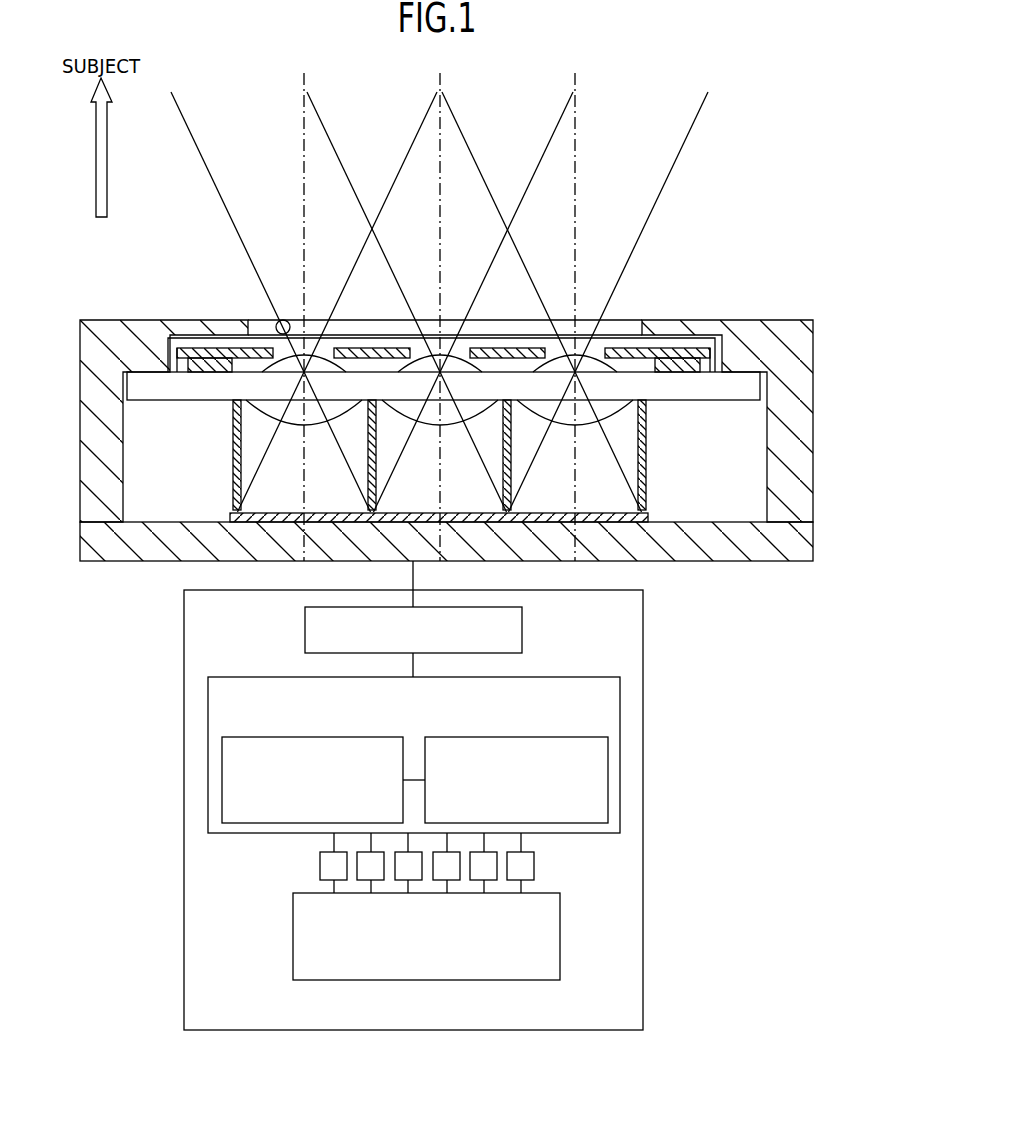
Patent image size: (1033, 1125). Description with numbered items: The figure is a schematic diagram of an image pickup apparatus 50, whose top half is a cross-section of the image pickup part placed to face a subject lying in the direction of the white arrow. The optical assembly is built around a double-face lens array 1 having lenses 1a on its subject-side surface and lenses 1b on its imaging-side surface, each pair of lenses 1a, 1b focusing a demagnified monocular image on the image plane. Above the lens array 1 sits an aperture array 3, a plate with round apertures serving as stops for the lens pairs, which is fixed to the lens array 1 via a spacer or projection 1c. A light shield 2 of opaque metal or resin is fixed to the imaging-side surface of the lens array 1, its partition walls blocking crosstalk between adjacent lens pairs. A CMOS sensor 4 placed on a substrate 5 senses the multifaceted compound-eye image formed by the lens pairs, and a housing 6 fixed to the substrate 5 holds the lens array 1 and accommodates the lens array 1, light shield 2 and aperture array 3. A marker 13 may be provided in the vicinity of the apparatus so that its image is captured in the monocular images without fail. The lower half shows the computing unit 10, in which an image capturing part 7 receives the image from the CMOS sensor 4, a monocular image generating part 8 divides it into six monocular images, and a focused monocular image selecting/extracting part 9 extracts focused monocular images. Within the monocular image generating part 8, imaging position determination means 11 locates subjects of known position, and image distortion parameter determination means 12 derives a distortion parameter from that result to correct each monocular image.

The image pickup apparatus 50 is at (756, 175).
The lens array 1 is at (725, 283).
The lens 1a is at (622, 360).
The lens 1b is at (617, 410).
The projection 1c is at (683, 370).
The light shield 2 is at (647, 450).
The aperture array 3 is at (700, 343).
The CMOS sensor 4 is at (648, 516).
The substrate 5 is at (698, 562).
The housing 6 is at (781, 321).
The image capturing part 7 is at (522, 632).
The monocular image generating part 8 is at (571, 677).
The focused monocular image selecting/extracting part 9 is at (560, 946).
The computing unit 10 is at (567, 1031).
The imaging position determination means 11 is at (310, 737).
The image distortion parameter determination means 12 is at (515, 737).
The marker 13 is at (284, 319).